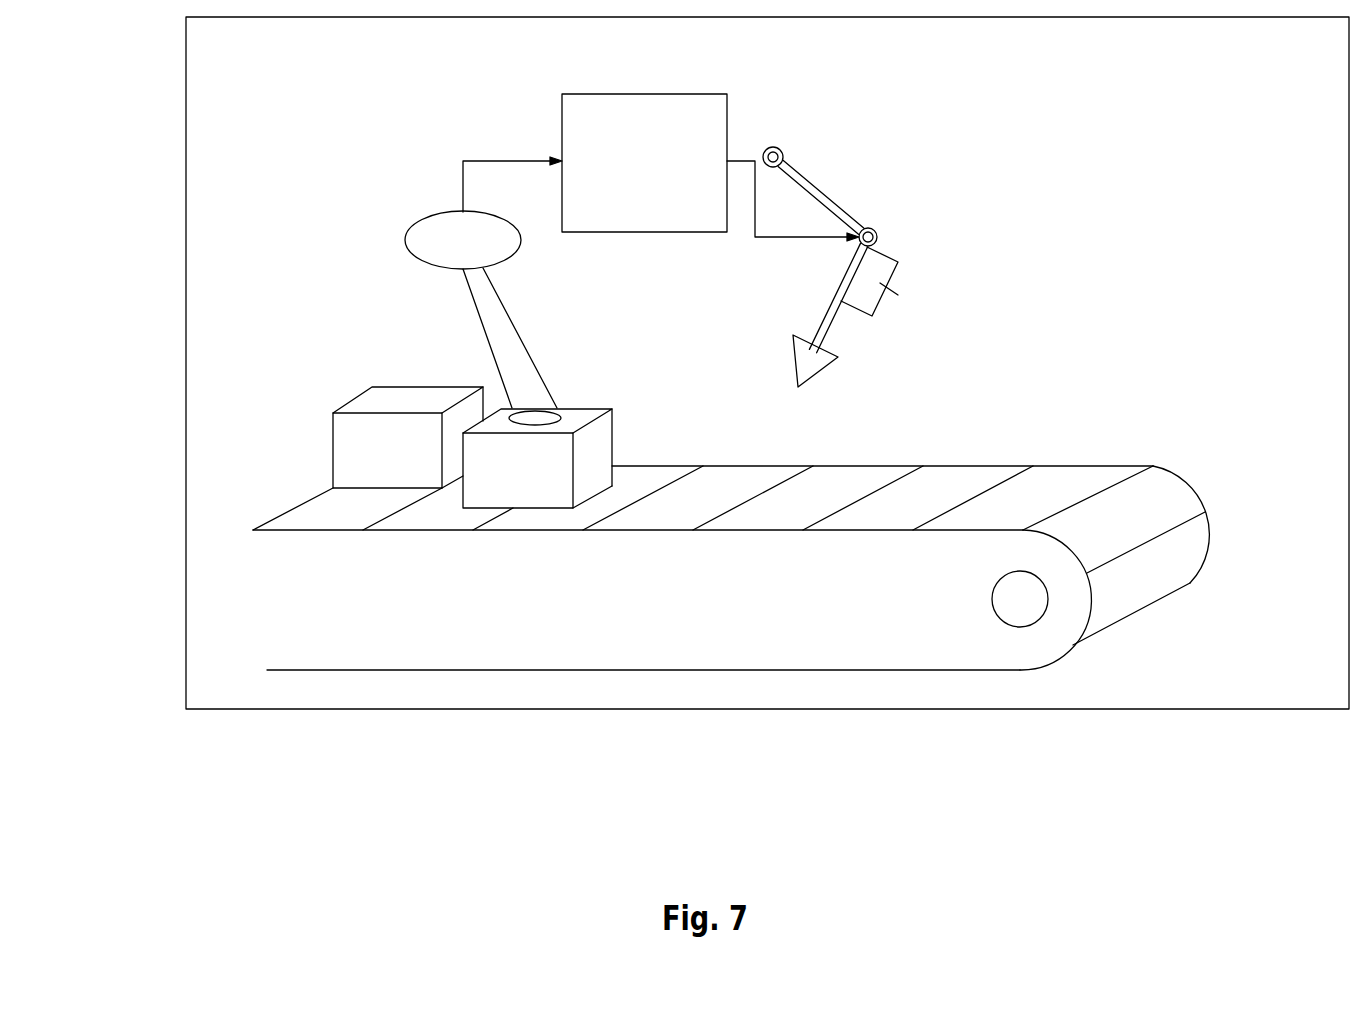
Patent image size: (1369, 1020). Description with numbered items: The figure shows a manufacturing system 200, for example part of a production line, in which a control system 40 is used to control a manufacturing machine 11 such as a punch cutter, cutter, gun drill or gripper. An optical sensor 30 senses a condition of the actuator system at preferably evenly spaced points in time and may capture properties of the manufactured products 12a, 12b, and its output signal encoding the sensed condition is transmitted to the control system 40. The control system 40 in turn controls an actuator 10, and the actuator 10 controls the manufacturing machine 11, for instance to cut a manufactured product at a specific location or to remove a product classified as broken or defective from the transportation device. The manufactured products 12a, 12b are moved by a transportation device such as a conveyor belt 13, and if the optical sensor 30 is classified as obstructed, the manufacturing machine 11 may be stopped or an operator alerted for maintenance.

The manufacturing system 200 is at (675, 715).
The control system 40 is at (547, 102).
The optical sensor 30 is at (405, 243).
The manufacturing machine 11 is at (837, 205).
The actuator 10 is at (897, 282).
The manufactured product 12a is at (620, 440).
The manufactured product 12b is at (353, 403).
The conveyor 13 is at (1217, 499).